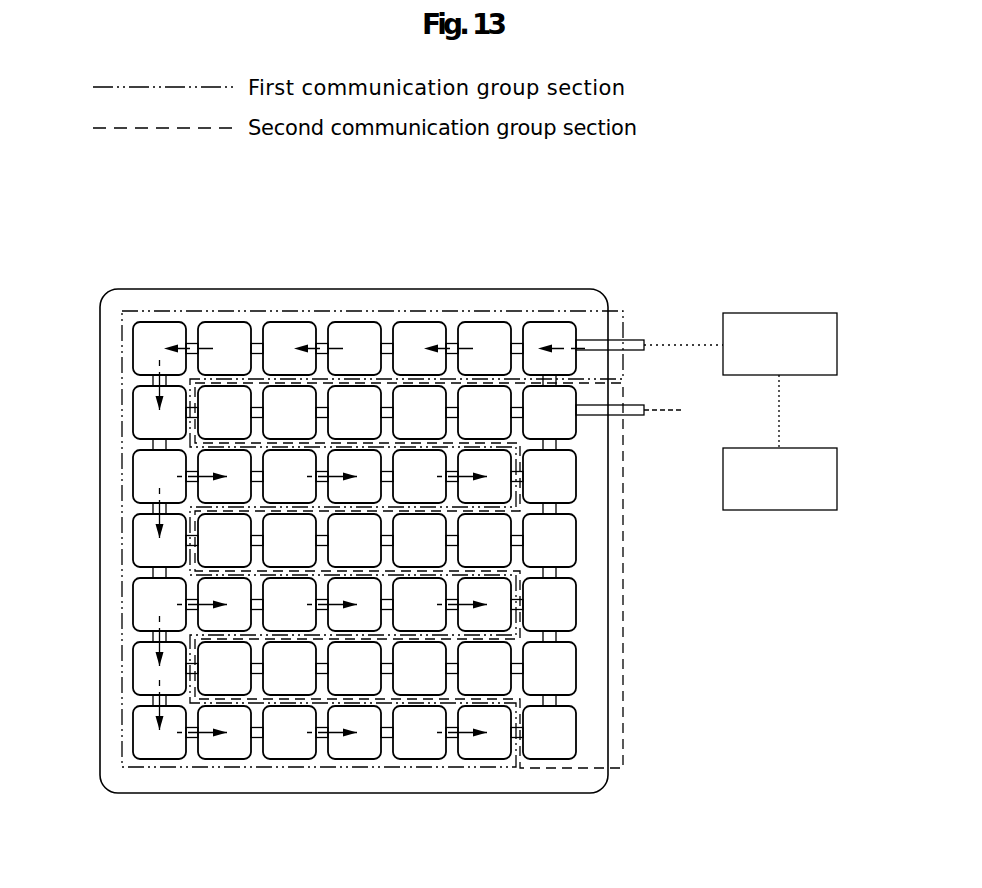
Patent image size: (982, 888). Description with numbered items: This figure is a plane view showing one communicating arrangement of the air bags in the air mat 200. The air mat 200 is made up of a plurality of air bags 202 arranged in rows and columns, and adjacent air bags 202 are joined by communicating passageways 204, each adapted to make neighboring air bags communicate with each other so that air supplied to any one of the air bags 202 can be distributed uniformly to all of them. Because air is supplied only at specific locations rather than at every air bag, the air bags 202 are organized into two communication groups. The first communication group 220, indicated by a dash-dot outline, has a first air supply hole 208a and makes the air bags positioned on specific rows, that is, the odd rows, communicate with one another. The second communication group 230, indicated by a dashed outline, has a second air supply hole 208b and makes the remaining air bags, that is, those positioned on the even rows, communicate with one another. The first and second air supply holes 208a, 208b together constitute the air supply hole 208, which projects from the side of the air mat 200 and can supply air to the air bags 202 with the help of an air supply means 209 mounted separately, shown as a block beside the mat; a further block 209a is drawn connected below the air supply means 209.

The air mat 200 is at (589, 260).
The air bags 202 is at (552, 333).
The communicating passageways 204 is at (455, 337).
The air supply hole 208 is at (649, 336).
The first air supply hole 208a is at (634, 343).
The second air supply hole 208b is at (634, 408).
The air supply means 209 is at (780, 380).
The power supply 209a is at (780, 479).
The first communication group 220 is at (230, 310).
The second communication group 230 is at (625, 603).